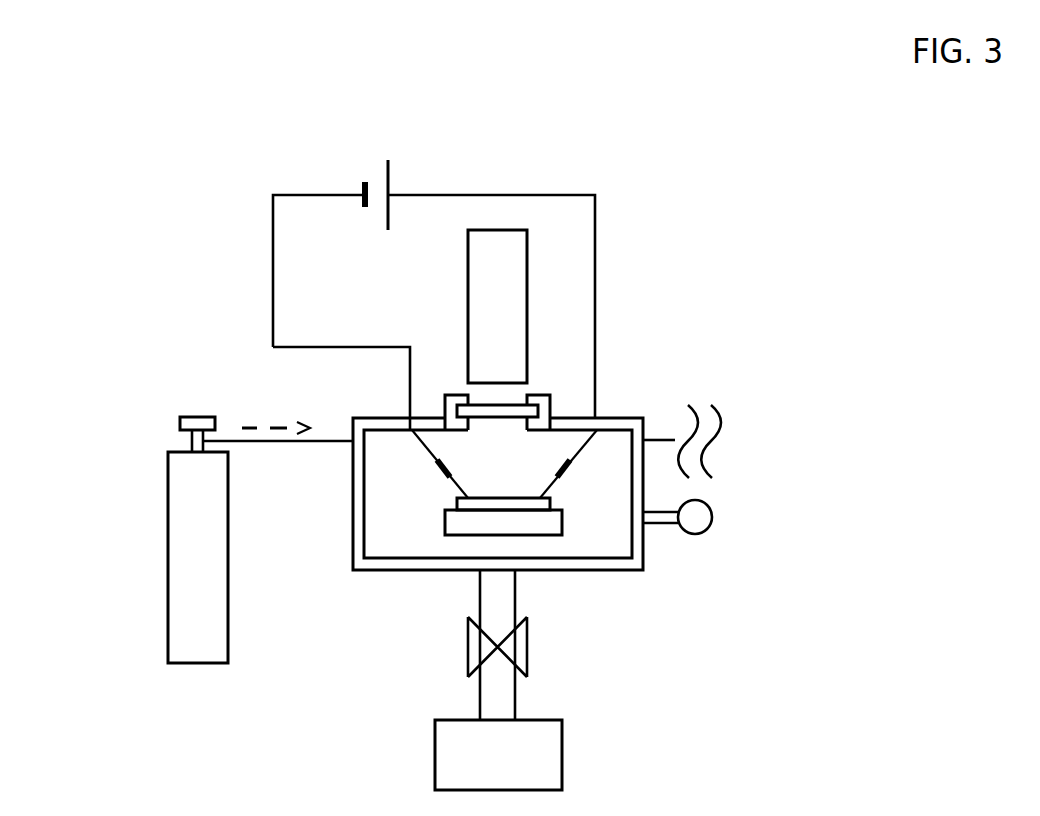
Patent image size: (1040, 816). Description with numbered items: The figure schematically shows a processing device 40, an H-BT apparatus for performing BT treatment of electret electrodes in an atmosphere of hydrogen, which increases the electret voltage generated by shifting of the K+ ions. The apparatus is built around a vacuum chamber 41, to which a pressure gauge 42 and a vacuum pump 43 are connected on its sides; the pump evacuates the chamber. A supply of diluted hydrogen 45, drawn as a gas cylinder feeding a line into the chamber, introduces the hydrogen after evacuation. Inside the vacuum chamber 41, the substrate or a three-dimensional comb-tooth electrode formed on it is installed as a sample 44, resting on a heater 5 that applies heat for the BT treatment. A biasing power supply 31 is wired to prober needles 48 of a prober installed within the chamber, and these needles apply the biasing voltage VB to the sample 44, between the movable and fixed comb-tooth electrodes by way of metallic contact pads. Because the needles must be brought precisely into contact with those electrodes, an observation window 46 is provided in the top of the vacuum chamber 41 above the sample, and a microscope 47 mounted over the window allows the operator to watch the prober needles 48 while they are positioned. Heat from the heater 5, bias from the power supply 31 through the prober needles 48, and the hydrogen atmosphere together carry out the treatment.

The processing device 40 is at (676, 193).
The biasing power supply 31 is at (402, 275).
The microscope 47 is at (468, 245).
The observation window 46 is at (513, 405).
The vacuum chamber 41 is at (627, 417).
The prober needles 48 is at (553, 470).
The sample 44 is at (552, 502).
The heater 5 is at (443, 528).
The pressure gauge 42 is at (808, 517).
The vacuum pump 43 is at (563, 763).
The diluted hydrogen 45 is at (188, 663).